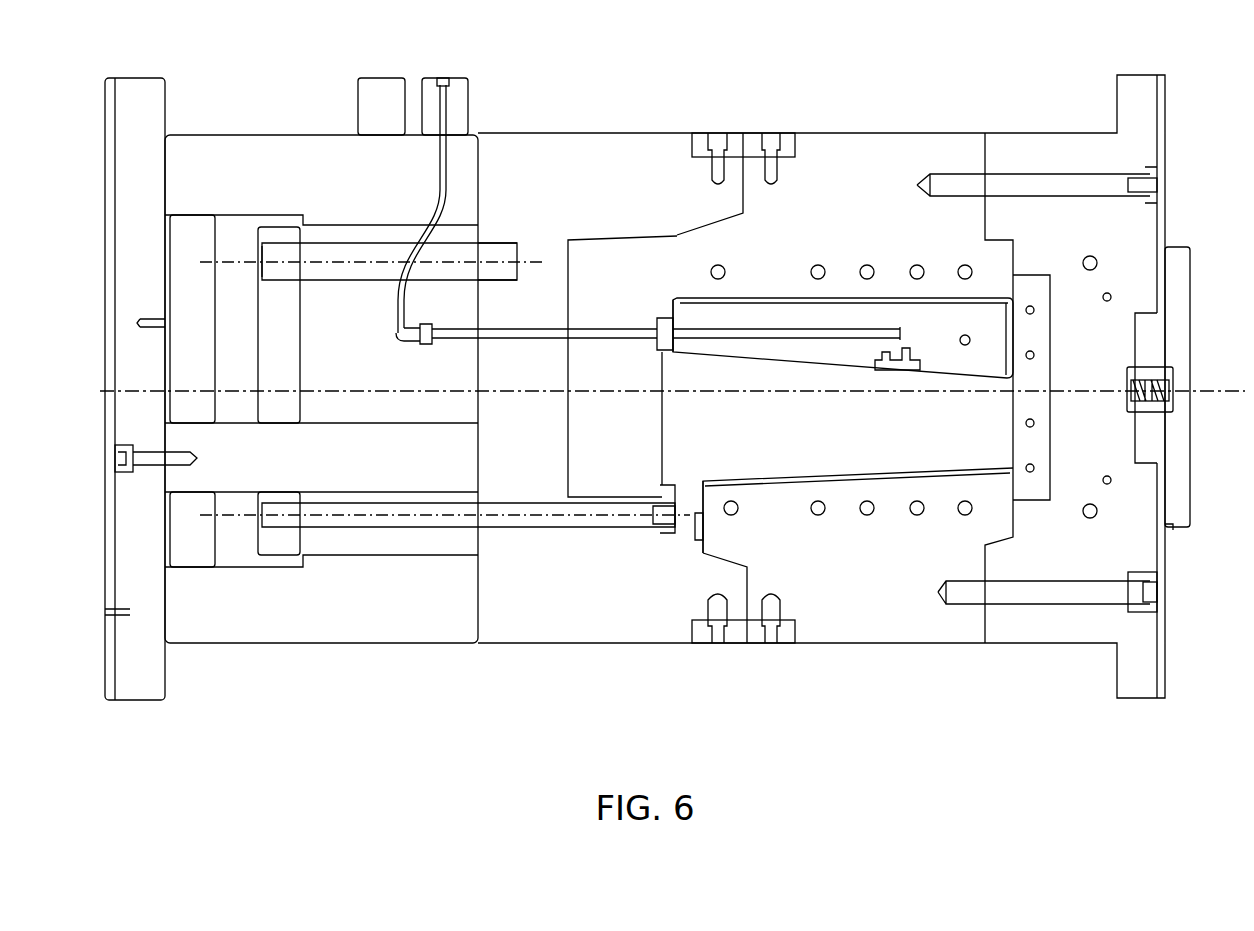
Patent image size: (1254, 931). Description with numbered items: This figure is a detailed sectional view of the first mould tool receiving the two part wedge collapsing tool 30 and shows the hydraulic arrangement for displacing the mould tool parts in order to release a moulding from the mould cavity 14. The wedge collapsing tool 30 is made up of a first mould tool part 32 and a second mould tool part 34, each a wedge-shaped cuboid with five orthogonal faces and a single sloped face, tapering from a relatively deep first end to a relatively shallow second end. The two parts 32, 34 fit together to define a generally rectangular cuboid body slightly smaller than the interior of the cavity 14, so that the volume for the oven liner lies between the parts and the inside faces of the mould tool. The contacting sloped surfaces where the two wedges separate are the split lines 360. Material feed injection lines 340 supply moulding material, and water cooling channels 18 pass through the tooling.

The cavity 14 is at (783, 297).
The water cooling channels 18 is at (720, 265).
The two part wedge collapsing tool 30 is at (542, 463).
The first mould tool part 32 is at (922, 323).
The second mould tool part 34 is at (633, 462).
The material feed injection lines 340 is at (817, 305).
The split lines 360 is at (670, 306).